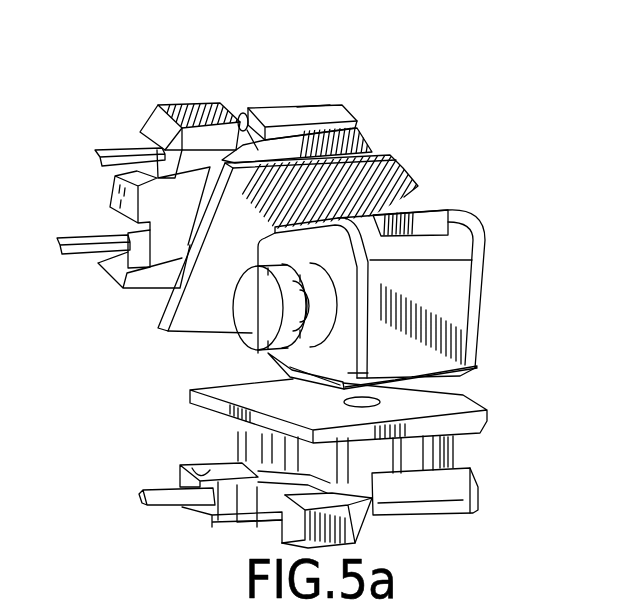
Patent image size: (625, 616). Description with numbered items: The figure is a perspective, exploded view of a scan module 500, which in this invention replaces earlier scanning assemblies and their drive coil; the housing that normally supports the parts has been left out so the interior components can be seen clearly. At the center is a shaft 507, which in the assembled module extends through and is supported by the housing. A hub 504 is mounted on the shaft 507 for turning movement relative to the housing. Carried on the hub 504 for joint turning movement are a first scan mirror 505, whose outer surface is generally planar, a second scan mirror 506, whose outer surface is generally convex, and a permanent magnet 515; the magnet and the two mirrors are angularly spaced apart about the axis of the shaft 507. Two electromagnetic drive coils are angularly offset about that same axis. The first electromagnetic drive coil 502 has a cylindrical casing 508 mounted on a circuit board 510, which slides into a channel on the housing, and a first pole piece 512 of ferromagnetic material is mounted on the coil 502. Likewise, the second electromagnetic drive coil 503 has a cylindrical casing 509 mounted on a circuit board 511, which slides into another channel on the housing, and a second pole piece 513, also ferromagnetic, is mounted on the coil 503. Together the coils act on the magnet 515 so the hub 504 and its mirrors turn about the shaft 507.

The scan module 500 is at (394, 124).
The first electromagnetic drive coil 502 is at (157, 128).
The second electromagnetic drive coil 503 is at (272, 537).
The hub 504 is at (486, 237).
The first scan mirror 505 is at (452, 296).
The second scan mirror 506 is at (427, 218).
The shaft 507 is at (240, 330).
The cylindrical casing 508 is at (246, 113).
The cylindrical casing 509 is at (455, 452).
The circuit board 510 is at (398, 213).
The circuit board 511 is at (452, 401).
The first pole piece 512 is at (283, 117).
The second pole piece 513 is at (397, 502).
The permanent magnet 515 is at (476, 364).